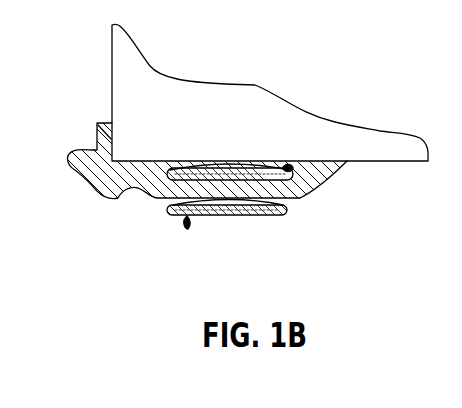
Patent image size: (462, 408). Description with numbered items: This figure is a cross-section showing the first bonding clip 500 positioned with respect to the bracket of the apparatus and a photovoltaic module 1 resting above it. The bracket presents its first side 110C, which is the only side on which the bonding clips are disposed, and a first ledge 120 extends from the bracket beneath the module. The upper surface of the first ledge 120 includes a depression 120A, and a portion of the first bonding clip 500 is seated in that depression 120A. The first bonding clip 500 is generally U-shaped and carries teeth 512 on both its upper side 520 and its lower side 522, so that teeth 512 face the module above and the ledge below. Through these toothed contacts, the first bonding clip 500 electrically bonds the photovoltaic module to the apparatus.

The article of footwear 1 is at (255, 84).
The first side 110C is at (410, 286).
The first ledge 120 is at (210, 181).
The depression 120A is at (338, 186).
The first bonding clip 500 is at (195, 244).
The teeth 512 is at (258, 165).
The upper side 520 is at (162, 208).
The lower side 522 is at (233, 217).